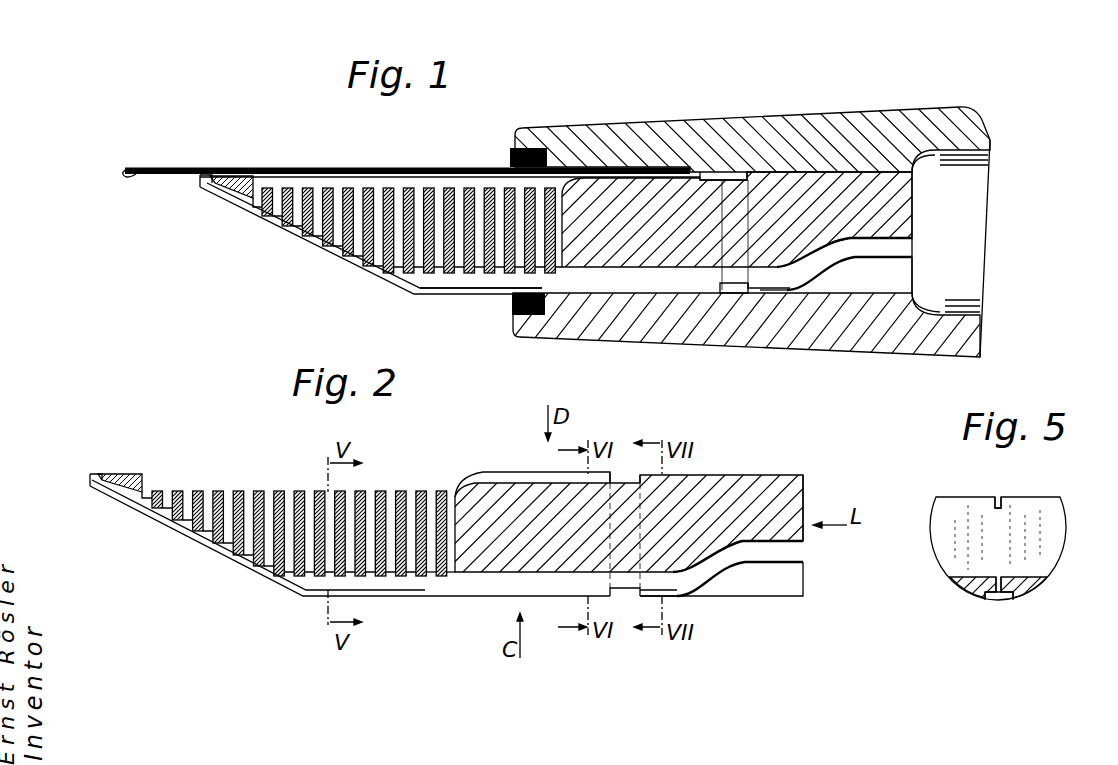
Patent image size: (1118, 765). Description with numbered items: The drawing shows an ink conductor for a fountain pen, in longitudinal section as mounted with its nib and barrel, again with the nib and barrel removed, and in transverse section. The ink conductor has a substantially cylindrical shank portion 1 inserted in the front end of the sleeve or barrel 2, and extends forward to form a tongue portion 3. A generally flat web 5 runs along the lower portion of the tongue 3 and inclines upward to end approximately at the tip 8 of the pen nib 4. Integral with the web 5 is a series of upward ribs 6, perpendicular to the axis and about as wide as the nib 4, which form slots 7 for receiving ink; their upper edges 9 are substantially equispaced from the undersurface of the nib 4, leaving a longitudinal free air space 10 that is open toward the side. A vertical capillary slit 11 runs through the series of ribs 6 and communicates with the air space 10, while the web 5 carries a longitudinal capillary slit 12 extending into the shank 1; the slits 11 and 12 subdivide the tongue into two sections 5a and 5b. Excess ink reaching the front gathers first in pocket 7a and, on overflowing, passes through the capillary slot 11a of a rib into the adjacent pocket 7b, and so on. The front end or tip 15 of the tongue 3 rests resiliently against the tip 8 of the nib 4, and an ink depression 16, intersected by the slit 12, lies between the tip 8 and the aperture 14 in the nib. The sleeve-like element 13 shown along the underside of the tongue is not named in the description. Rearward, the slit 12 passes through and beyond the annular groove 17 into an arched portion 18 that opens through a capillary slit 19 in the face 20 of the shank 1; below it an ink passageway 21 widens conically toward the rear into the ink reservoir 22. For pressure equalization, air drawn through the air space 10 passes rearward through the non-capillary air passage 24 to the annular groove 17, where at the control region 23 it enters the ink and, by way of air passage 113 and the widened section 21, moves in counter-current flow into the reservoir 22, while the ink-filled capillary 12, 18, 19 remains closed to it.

In FIG. 1, the ink conductor shank portion 1 is at (780, 172).
In FIG. 2, the ink conductor shank portion 1 is at (733, 478).
In FIG. 1, the sleeve or barrel 2 is at (883, 118).
In FIG. 1, the tongue portion 3 is at (472, 268).
In FIG. 2, the tongue portion 3 is at (440, 566).
In FIG. 1, the pen nib 4 is at (460, 167).
In FIG. 1, the web 5 is at (494, 285).
In FIG. 2, the web 5 is at (243, 536).
In FIG. 5, the tongue section 5a is at (1021, 590).
In FIG. 5, the tongue section 5b is at (970, 594).
In FIG. 1, the ribs 6 is at (391, 254).
In FIG. 2, the ribs 6 is at (253, 506).
In FIG. 5, the ribs 6 is at (1054, 520).
In FIG. 1, the slots 7 is at (500, 196).
In FIG. 2, the slots 7 is at (409, 500).
In FIG. 2, the pocket 7a is at (451, 505).
In FIG. 2, the pocket 7b is at (427, 500).
In FIG. 1, the tip of the pen nib 8 is at (176, 166).
In FIG. 1, the upper edges of the ribs 9 is at (327, 188).
In FIG. 1, the free air space 10 is at (397, 177).
In FIG. 1, the capillary slit 11 is at (430, 188).
In FIG. 5, the capillary slit 11 is at (1000, 496).
In FIG. 2, the capillary slot of rib 11a is at (442, 507).
In FIG. 1, the capillary slit 12 is at (301, 226).
In FIG. 2, the capillary slit 12 is at (181, 522).
In FIG. 5, the capillary slit 12 is at (1002, 600).
In FIG. 1, the sleeve / outer shell 13 is at (259, 215).
In FIG. 2, the sleeve / outer shell 13 is at (139, 509).
In FIG. 5, the sleeve / outer shell 13 is at (990, 604).
In FIG. 1, the aperture in the nib 14 is at (338, 176).
In FIG. 1, the tip of the ink conductor 15 is at (204, 184).
In FIG. 2, the tip of the ink conductor 15 is at (95, 476).
In FIG. 1, the ink depression 16 is at (229, 175).
In FIG. 2, the ink depression 16 is at (122, 480).
In FIG. 1, the annular groove 17 is at (725, 172).
In FIG. 2, the annular groove 17 is at (623, 484).
In FIG. 1, the arched portion 18 is at (834, 268).
In FIG. 1, the capillary slit end 19 is at (913, 246).
In FIG. 2, the capillary slit end 19 is at (800, 553).
In FIG. 1, the face of shank 20 is at (914, 195).
In FIG. 2, the face of shank 20 is at (804, 492).
In FIG. 1, the ink passageway 21 is at (876, 292).
In FIG. 2, the ink passageway 21 is at (797, 590).
In FIG. 1, the ink reservoir 22 is at (984, 203).
In FIG. 1, the control region 23 is at (771, 294).
In FIG. 2, the control region 23 is at (665, 583).
In FIG. 1, the air passage 24 is at (608, 178).
In FIG. 2, the air passage 24 is at (508, 482).
In FIG. 1, the air passage 113 is at (759, 292).
In FIG. 2, the air passage 113 is at (637, 598).